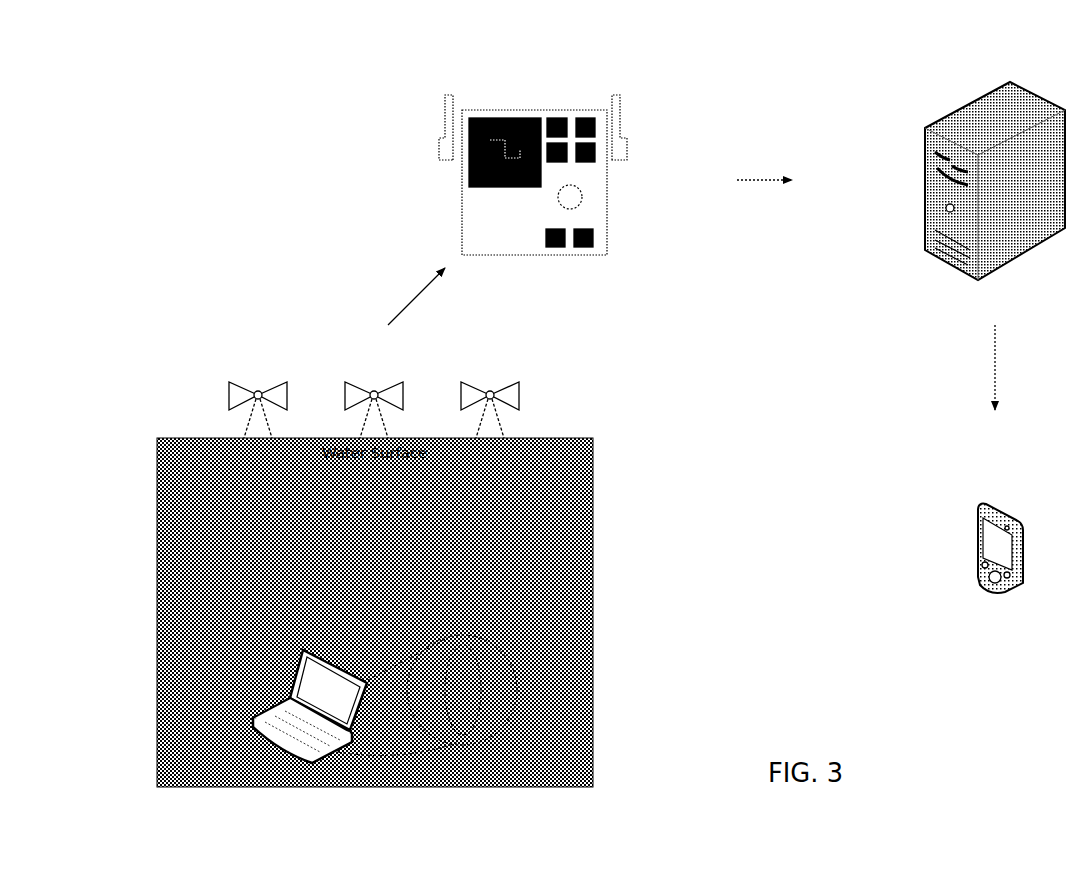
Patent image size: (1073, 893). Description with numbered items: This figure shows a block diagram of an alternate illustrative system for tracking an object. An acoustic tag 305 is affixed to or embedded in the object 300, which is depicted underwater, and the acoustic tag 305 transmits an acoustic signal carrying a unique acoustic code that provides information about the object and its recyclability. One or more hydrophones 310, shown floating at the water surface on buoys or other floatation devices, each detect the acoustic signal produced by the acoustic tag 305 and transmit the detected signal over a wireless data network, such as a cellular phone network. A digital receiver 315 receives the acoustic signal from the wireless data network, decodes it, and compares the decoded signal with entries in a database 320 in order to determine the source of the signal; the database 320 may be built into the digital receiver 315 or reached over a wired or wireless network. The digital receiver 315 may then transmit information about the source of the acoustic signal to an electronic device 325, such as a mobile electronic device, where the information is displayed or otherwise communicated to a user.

The object 300 is at (252, 727).
The acoustic tag 305 is at (483, 684).
The hydrophones 310 is at (257, 383).
The digital receiver 315 is at (537, 110).
The database 320 is at (925, 127).
The electronic device 325 is at (997, 503).